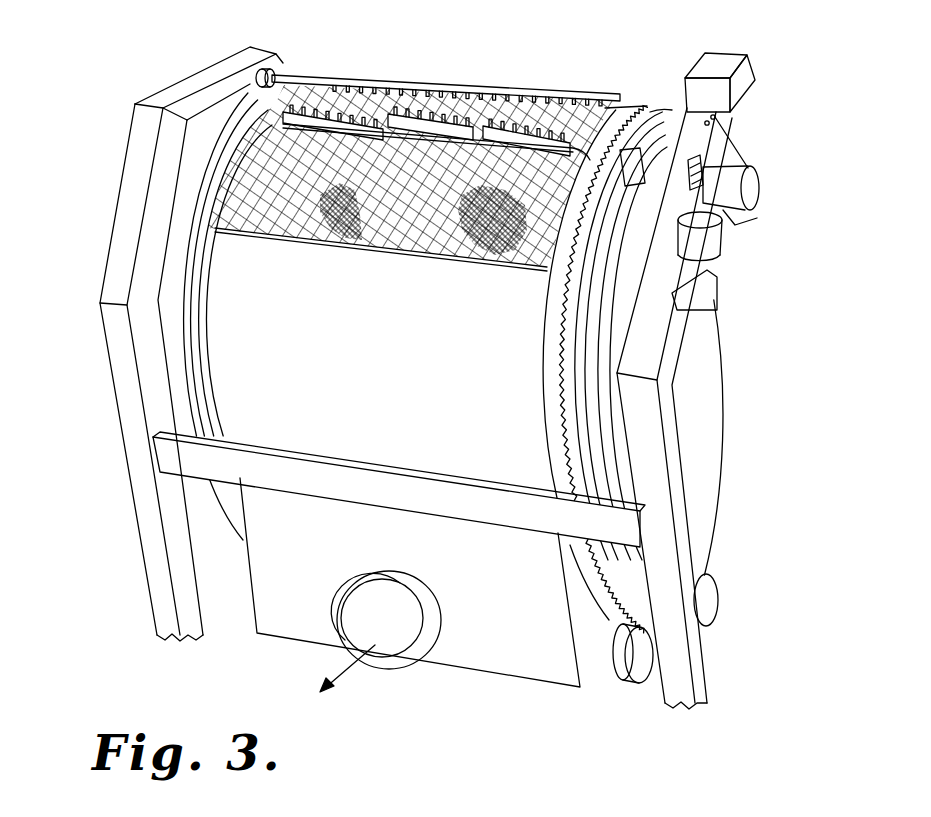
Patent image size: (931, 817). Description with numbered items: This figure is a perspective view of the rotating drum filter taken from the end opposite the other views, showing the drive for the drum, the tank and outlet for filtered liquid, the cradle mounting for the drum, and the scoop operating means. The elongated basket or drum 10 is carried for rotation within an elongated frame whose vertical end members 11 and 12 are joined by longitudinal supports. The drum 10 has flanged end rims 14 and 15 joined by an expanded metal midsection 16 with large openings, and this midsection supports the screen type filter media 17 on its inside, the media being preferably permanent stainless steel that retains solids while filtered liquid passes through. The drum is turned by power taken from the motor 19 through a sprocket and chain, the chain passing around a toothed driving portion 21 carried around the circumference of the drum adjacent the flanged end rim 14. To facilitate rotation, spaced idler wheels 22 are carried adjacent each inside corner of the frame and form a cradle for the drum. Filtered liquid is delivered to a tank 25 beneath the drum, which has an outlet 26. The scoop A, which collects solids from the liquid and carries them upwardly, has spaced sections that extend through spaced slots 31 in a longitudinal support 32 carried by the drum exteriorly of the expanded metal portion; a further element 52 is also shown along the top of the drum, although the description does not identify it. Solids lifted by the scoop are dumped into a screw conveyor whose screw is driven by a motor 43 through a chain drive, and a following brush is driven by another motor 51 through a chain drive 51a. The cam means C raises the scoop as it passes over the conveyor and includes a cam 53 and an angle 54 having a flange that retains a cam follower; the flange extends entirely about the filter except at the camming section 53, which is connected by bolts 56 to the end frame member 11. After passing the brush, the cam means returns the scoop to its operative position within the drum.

The drum 10 is at (233, 123).
The vertical end member 11 is at (655, 497).
The vertical end member 12 is at (115, 339).
The flanged end rim 14 is at (553, 460).
The flanged end rim 15 is at (190, 208).
The expanded metal midsection 16 is at (452, 212).
The screen type filter media 17 is at (477, 233).
The motor 19 is at (727, 60).
The toothed driving portion 21 is at (644, 103).
The idler wheels 22 is at (715, 598).
The tank 25 is at (267, 598).
The outlet 26 is at (383, 670).
The slots 31 is at (432, 165).
The longitudinal support 32 is at (372, 160).
The motor 43 is at (713, 247).
The motor 51 is at (755, 188).
The chain drive 51a is at (700, 163).
The shaft 52 is at (545, 90).
The cam 53 is at (659, 165).
The angle 54 is at (587, 398).
The bolts 56 is at (720, 119).
The scoop A is at (492, 128).
The cam means C is at (668, 110).